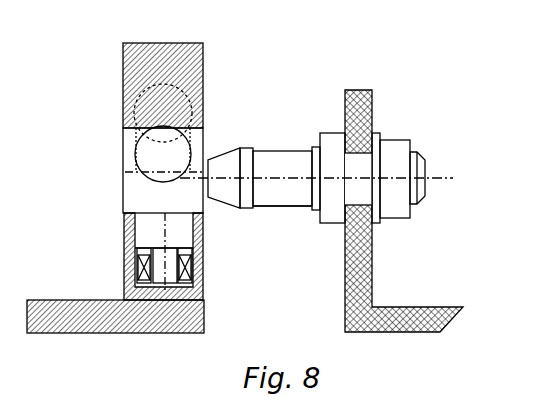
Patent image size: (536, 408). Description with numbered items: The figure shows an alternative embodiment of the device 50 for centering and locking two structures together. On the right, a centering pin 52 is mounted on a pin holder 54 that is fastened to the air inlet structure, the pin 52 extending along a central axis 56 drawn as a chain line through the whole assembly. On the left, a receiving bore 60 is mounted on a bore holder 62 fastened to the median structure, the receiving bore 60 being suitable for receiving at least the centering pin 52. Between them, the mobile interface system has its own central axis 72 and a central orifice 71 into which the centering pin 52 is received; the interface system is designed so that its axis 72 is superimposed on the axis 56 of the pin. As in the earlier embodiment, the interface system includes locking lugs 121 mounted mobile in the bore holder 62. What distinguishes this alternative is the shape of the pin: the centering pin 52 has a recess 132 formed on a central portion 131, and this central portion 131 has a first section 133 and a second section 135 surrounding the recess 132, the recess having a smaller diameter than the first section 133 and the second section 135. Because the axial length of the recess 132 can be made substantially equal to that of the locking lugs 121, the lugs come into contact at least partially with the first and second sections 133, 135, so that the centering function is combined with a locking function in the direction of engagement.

The device 50 is at (318, 66).
The centering pin 52 is at (261, 204).
The pin holder 54 is at (372, 96).
The central axis 56 is at (453, 178).
The receiving bore 60 is at (137, 212).
The bore holder 62 is at (142, 74).
The central orifice 71 is at (140, 192).
The central axis 72 is at (117, 173).
The locking lugs 121 is at (152, 156).
The central portion 131 is at (285, 204).
The recess 132 is at (275, 150).
The first section 133 is at (246, 150).
The second section 135 is at (318, 212).